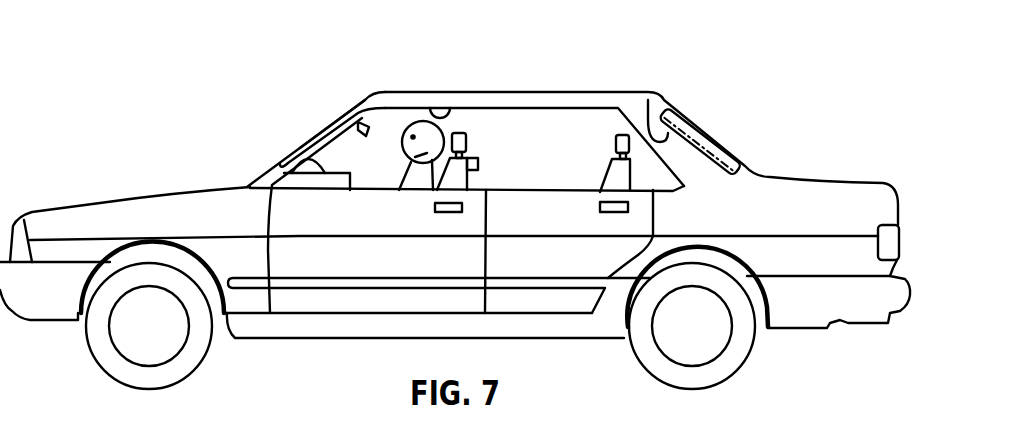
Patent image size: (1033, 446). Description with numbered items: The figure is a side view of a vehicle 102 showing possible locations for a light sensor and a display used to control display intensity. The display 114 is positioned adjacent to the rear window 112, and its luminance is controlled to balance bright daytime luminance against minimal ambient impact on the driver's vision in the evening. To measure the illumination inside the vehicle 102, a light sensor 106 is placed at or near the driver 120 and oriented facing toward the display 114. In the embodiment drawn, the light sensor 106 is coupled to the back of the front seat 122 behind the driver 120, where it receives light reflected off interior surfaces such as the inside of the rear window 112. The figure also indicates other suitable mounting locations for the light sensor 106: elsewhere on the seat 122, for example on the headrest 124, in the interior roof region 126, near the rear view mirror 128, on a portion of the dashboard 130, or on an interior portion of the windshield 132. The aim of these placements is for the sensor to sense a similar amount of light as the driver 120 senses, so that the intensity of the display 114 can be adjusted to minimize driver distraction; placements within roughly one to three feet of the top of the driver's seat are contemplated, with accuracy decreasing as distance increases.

The vehicle 102 is at (133, 195).
The light sensor 106 is at (472, 156).
The rear window 112 is at (707, 130).
The display 114 is at (648, 100).
The driver 120 is at (407, 122).
The front seat 122 is at (462, 182).
The headrest 124 is at (467, 131).
The interior roof region 126 is at (430, 107).
The rear view mirror 128 is at (364, 136).
The dashboard 130 is at (297, 157).
The windshield 132 is at (335, 118).